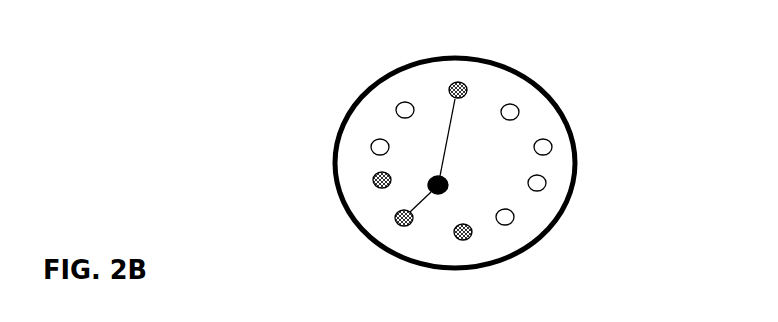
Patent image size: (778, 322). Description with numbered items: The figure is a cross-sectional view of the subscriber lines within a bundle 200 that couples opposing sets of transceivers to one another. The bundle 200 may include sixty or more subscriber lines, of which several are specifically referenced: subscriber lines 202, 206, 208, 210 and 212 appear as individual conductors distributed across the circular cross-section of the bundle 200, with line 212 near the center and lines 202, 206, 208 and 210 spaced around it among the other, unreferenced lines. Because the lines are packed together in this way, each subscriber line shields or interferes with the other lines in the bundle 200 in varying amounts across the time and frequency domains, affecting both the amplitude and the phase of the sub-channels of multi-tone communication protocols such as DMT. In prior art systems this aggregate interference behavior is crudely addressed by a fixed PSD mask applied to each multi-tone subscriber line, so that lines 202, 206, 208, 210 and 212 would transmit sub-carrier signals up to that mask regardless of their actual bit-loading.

The bundle 200 is at (566, 102).
The subscriber line 202 is at (458, 82).
The subscriber line 206 is at (374, 185).
The subscriber line 208 is at (401, 226).
The subscriber line 210 is at (462, 241).
The subscriber line 212 is at (448, 185).